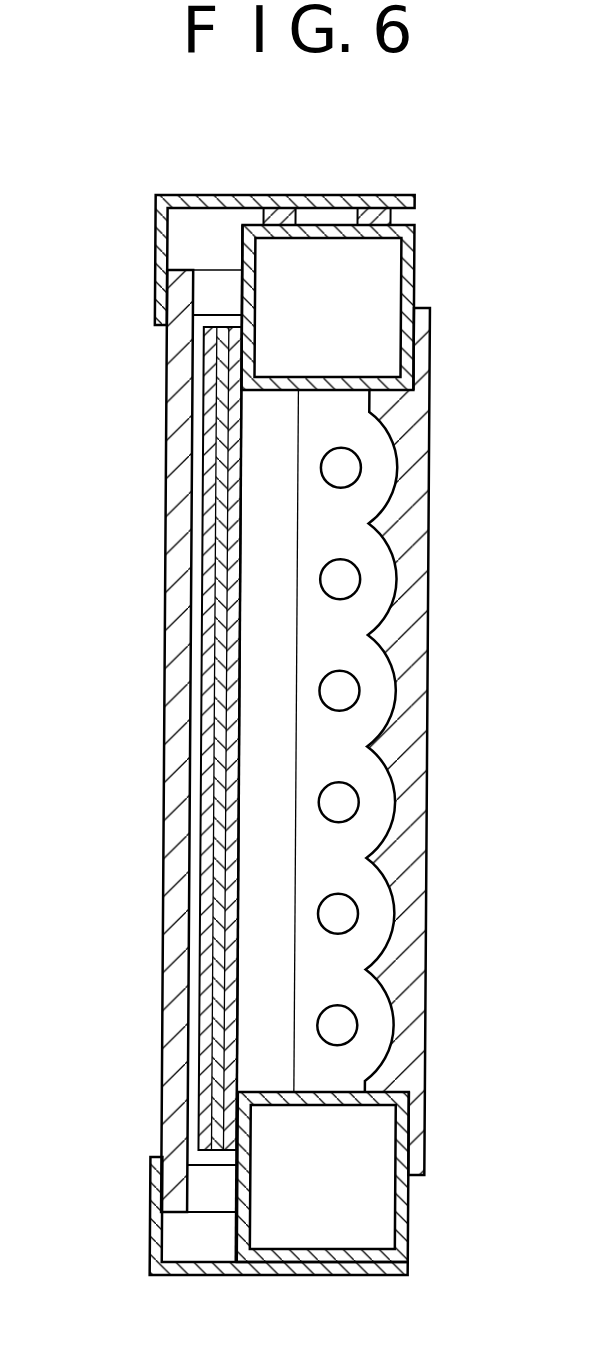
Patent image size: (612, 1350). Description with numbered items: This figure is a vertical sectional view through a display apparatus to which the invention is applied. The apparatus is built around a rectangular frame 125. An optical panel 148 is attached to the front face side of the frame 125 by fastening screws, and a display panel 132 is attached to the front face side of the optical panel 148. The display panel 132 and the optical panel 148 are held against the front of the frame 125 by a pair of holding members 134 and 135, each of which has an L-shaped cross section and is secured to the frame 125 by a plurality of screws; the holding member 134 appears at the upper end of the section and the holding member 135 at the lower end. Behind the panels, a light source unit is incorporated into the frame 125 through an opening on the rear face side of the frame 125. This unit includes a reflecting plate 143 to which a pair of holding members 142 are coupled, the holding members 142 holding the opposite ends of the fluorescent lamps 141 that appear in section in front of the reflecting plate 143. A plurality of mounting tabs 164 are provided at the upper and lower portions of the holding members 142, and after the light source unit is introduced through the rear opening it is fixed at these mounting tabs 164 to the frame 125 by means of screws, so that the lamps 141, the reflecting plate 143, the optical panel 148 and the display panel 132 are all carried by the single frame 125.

The frame 125 is at (416, 252).
The display panel 132 is at (166, 830).
The holding member 134 is at (155, 228).
The holding member 135 is at (150, 1235).
The fluorescent lamp 141 is at (362, 576).
The holding member 142 is at (360, 827).
The reflecting plate 143 is at (395, 705).
The optical panel 148 is at (200, 647).
The mounting tab 164 is at (430, 327).